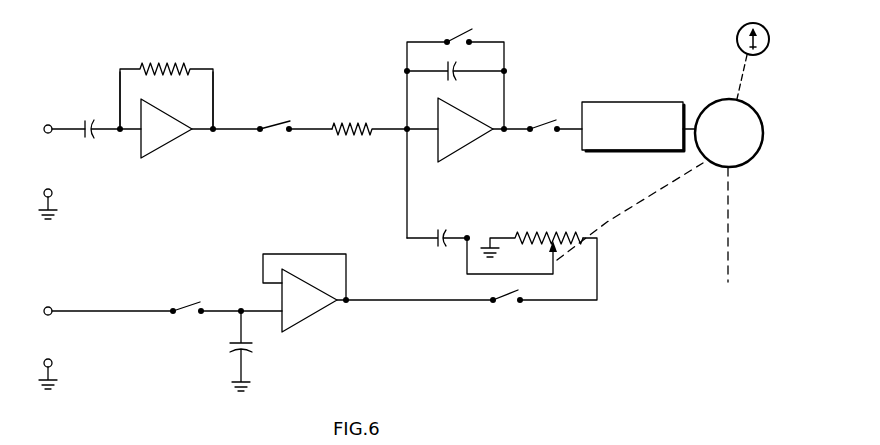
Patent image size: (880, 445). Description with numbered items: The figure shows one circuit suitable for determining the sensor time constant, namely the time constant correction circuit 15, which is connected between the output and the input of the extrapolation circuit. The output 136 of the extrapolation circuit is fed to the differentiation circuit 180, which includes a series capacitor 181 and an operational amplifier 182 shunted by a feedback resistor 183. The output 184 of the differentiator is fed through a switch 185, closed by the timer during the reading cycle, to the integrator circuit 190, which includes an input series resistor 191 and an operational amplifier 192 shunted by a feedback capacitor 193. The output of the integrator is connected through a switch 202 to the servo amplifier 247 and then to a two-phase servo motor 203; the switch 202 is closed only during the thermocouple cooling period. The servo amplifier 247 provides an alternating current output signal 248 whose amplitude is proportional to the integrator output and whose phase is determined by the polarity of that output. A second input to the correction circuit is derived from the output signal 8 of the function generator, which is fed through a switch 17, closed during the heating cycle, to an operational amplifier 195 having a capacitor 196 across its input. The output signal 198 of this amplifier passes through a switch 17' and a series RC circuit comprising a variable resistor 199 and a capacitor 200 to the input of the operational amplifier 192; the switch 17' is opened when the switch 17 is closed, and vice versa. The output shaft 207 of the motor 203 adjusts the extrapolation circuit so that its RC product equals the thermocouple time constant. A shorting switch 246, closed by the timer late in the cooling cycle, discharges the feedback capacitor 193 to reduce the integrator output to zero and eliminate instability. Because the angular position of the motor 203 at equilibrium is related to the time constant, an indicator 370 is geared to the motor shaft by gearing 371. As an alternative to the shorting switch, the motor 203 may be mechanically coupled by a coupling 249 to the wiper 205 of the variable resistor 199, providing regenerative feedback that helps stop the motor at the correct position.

The output of the extrapolation circuit 136 is at (52, 132).
The series capacitor 181 is at (96, 134).
The operational amplifier 182 is at (163, 105).
The feedback resistor 183 is at (188, 50).
The differentiation circuit 180 is at (210, 176).
The output of the differentiator circuit 184 is at (235, 132).
The switch 185 is at (278, 123).
The input series resistor 191 is at (370, 122).
The shorting switch 246 is at (452, 36).
The feedback capacitor 193 is at (457, 73).
The integrator circuit 190 is at (560, 75).
The operational amplifier 192 is at (460, 148).
The switch 202 is at (545, 118).
The servo amplifier 247 is at (638, 102).
The alternating current output signal 248 is at (686, 129).
The two-phase servo motor 203 is at (752, 108).
The indicator 370 is at (778, 28).
The gearing 371 is at (747, 70).
The coupling 249 is at (651, 196).
The output shaft 207 is at (730, 210).
The capacitor 200 is at (447, 232).
The variable resistor 199 is at (547, 233).
The wiper 205 is at (556, 268).
The time constant correction circuit 15 is at (397, 276).
The operational amplifier 195 is at (322, 282).
The output signal 198 is at (412, 303).
The switch 17' is at (530, 270).
The output signal of the function generator 8 is at (135, 309).
The switch 17 is at (226, 295).
The capacitor 196 is at (252, 339).